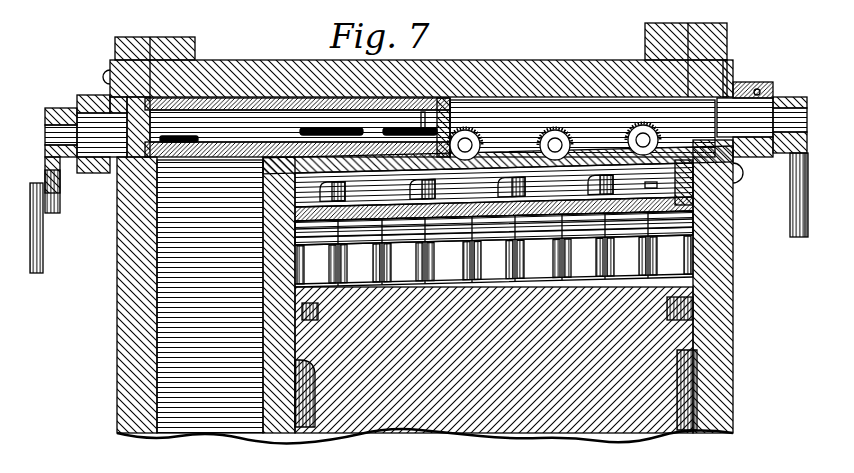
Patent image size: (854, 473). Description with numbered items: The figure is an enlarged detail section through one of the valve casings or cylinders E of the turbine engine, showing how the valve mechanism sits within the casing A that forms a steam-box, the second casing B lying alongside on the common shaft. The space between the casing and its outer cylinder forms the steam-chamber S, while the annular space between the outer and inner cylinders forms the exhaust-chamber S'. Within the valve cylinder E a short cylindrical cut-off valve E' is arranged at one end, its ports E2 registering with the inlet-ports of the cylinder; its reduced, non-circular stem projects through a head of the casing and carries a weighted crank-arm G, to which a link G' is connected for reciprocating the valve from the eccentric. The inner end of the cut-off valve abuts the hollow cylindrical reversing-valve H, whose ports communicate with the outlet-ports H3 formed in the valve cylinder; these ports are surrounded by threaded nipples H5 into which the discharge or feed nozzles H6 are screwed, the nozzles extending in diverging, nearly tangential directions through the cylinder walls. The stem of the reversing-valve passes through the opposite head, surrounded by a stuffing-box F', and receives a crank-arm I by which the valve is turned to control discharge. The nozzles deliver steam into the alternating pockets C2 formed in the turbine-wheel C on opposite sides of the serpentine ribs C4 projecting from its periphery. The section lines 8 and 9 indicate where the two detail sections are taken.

The casing A is at (583, 58).
The casing B is at (254, 391).
The turbine-wheel C is at (496, 360).
The pockets C2 is at (423, 272).
The ribs C4 is at (683, 260).
The valve casing or cylinder E is at (582, 95).
The cut-off valve E' is at (297, 97).
The ports E2 is at (185, 136).
The stuffing-box F' is at (437, 135).
The weighted crank-arm G is at (50, 138).
The link G' is at (57, 221).
The reversing-valve H is at (412, 110).
The outlet-ports H3 is at (328, 130).
The threaded nipples H5 is at (618, 129).
The discharge or feed nozzles H6 is at (328, 198).
The crank-arm I is at (792, 185).
The steam-chamber S is at (210, 296).
The exhaust-chamber S' is at (702, 209).
The section line 8 is at (222, 147).
The section line 9 is at (423, 112).